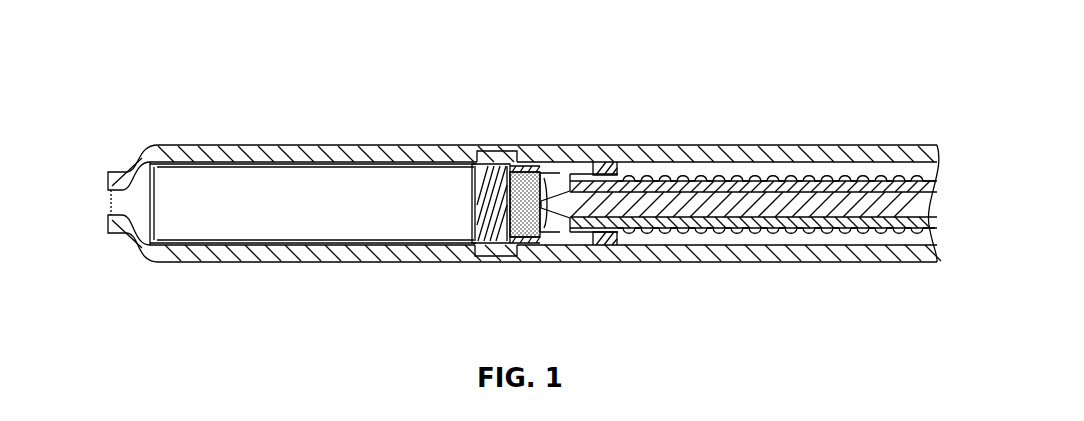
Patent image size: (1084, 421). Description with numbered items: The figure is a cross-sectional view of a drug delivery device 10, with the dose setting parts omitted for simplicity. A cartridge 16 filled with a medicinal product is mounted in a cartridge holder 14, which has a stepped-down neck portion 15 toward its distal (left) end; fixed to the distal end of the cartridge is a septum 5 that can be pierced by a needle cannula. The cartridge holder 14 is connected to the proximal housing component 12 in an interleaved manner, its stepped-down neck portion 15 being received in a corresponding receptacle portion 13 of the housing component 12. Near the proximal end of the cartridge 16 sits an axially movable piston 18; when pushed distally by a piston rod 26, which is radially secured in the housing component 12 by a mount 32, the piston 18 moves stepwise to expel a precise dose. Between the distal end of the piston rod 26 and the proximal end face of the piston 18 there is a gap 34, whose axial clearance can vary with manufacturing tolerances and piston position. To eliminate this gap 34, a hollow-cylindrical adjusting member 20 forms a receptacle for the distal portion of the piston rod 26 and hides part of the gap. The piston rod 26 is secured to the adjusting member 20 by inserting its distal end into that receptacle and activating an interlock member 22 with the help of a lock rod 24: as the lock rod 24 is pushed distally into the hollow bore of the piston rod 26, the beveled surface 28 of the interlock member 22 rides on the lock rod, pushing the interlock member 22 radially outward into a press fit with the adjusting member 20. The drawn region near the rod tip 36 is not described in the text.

The drug delivery device 10 is at (656, 50).
The housing component 12 is at (762, 153).
The cartridge holder 14 is at (168, 152).
The cartridge 16 is at (292, 178).
The septum 5 is at (106, 203).
The stepped-down neck portion 15 is at (488, 155).
The receptacle portion 13 is at (483, 257).
The piston 18 is at (484, 172).
The adjusting member 20 is at (530, 175).
The interlock member 22 is at (550, 175).
The gap 34 is at (520, 245).
The beveled surface 28 is at (554, 225).
The rod tip 36 is at (558, 175).
The lock rod 24 is at (620, 185).
The piston rod 26 is at (626, 235).
The mount 32 is at (611, 242).